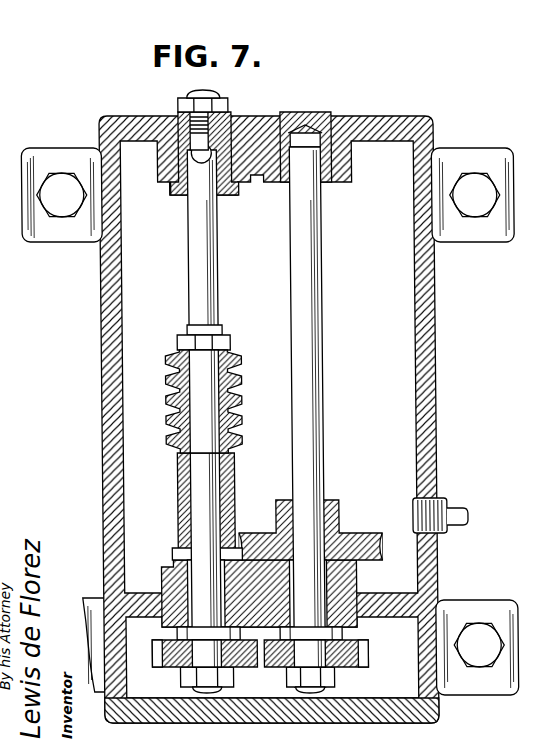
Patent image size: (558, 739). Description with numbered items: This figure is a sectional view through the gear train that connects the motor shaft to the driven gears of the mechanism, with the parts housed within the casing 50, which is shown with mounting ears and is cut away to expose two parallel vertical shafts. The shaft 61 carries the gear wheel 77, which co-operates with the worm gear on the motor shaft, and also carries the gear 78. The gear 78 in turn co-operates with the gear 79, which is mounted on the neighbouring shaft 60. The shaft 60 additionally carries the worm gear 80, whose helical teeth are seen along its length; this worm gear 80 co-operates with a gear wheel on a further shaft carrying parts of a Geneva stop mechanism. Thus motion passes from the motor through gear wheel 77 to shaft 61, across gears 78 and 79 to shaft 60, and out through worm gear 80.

The housing 50 is at (428, 410).
The shaft 60 is at (203, 502).
The shaft 61 is at (312, 453).
The gear wheel 77 is at (358, 538).
The gear 78 is at (355, 668).
The gear 79 is at (172, 660).
The worm gear 80 is at (236, 407).